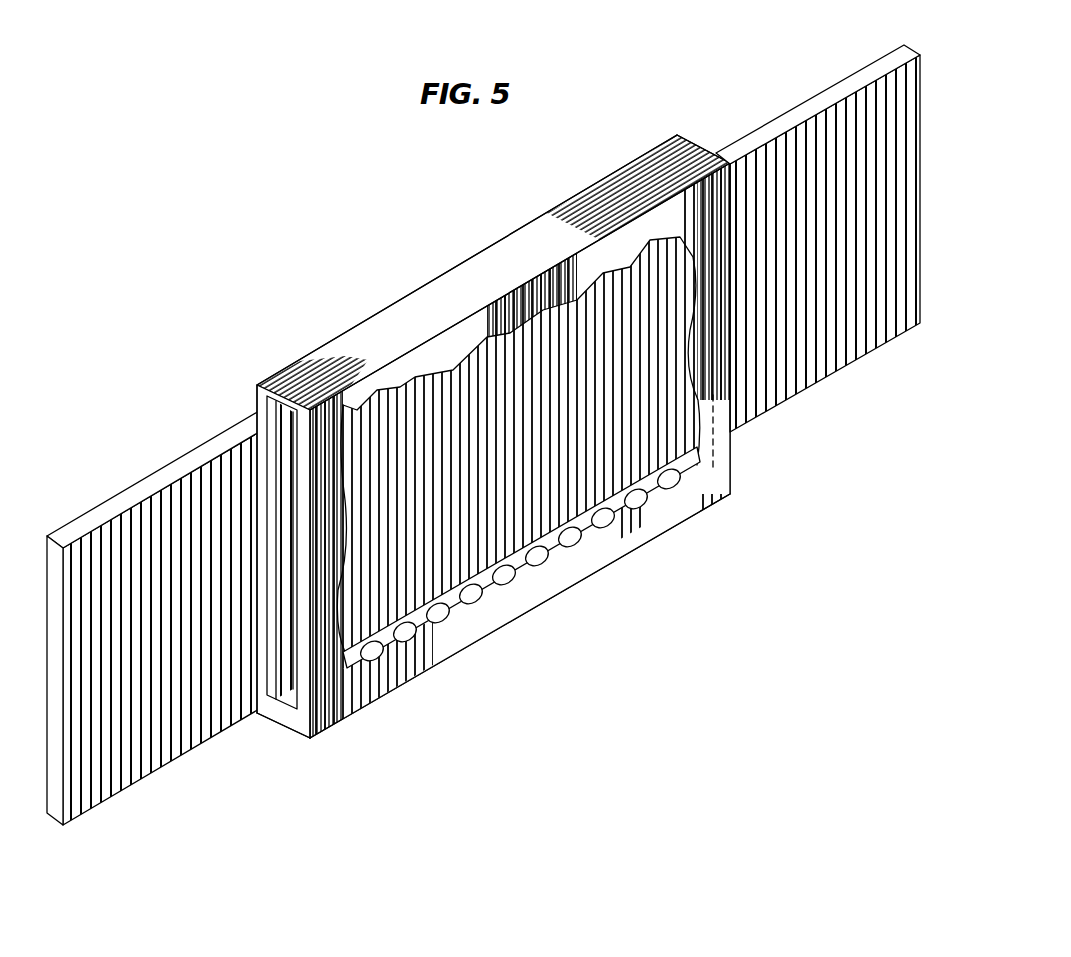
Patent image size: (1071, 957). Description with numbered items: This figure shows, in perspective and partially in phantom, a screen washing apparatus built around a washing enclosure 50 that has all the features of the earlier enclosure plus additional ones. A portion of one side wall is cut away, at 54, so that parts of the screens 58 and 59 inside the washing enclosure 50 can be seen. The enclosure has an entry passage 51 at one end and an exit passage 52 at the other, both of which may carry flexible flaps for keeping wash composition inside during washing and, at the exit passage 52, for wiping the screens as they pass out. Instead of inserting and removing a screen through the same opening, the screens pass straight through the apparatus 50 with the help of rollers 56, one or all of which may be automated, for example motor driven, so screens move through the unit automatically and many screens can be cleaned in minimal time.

The washing enclosure 50 is at (502, 407).
The entry passage 51 is at (285, 405).
The exit passage 52 is at (724, 156).
The cut-away portion of side wall 54 is at (490, 305).
The rollers 56 is at (676, 486).
The screen 58 is at (127, 488).
The screen 59 is at (843, 83).